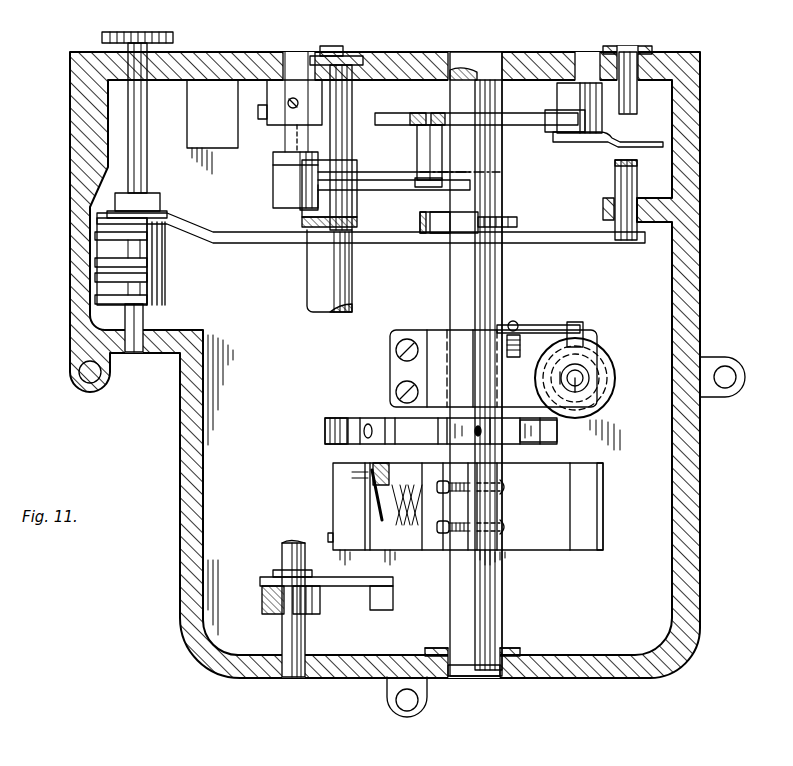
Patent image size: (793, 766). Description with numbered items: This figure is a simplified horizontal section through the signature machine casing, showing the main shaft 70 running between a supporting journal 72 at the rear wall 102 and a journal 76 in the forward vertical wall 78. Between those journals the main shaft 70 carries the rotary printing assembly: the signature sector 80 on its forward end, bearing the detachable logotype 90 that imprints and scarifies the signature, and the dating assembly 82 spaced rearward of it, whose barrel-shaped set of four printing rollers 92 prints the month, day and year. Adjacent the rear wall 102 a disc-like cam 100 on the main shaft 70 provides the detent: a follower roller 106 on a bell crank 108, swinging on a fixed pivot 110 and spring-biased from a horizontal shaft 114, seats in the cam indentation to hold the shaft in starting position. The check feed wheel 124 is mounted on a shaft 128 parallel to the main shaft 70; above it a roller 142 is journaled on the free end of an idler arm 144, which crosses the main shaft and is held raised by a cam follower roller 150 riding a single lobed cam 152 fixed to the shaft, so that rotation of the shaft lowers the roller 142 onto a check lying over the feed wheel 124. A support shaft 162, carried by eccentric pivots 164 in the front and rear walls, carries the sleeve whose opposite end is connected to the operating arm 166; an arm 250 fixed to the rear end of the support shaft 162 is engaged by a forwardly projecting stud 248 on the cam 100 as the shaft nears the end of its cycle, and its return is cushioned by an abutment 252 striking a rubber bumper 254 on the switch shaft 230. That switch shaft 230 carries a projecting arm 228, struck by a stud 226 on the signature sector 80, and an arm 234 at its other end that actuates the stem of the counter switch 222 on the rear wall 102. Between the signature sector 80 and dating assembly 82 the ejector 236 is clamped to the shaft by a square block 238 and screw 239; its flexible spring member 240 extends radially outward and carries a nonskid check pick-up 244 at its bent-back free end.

The main shaft 70 is at (490, 190).
The supporting journal 72 is at (486, 48).
The journal 76 is at (483, 682).
The forward vertical wall 78 is at (550, 675).
The signature sector 80 is at (560, 486).
The dating assembly 82 is at (385, 392).
The detachable logotype 90 is at (603, 525).
The printing rollers 92 is at (612, 352).
The disc-like cam 100 is at (528, 128).
The rear wall 102 is at (400, 60).
The follower roller 106 is at (590, 122).
The bell crank 108 is at (635, 130).
The fixed pivot 110 is at (557, 98).
The horizontal shaft 114 is at (615, 178).
The check feed wheel 124 is at (160, 268).
The shaft 128 is at (136, 320).
The roller 142 is at (97, 232).
The idler arm 144 is at (560, 250).
The cam follower roller 150 is at (448, 236).
The single lobed cam 152 is at (512, 213).
The support shaft 162 is at (352, 140).
The eccentric pivots 164 is at (342, 53).
The operating arm 166 is at (291, 236).
The counter switch 222 is at (187, 128).
The stud 226 is at (393, 598).
The projecting arm 228 is at (335, 586).
The shaft 230 is at (290, 678).
The arm 234 is at (275, 116).
The ejector 236 is at (273, 176).
The square block 238 is at (505, 432).
The screw 239 is at (530, 445).
The spring member 240 is at (441, 431).
The check pick-up 244 is at (337, 420).
The stud 248 is at (417, 155).
The arm 250 is at (395, 185).
The abutment 252 is at (322, 192).
The rubber bumper 254 is at (275, 170).